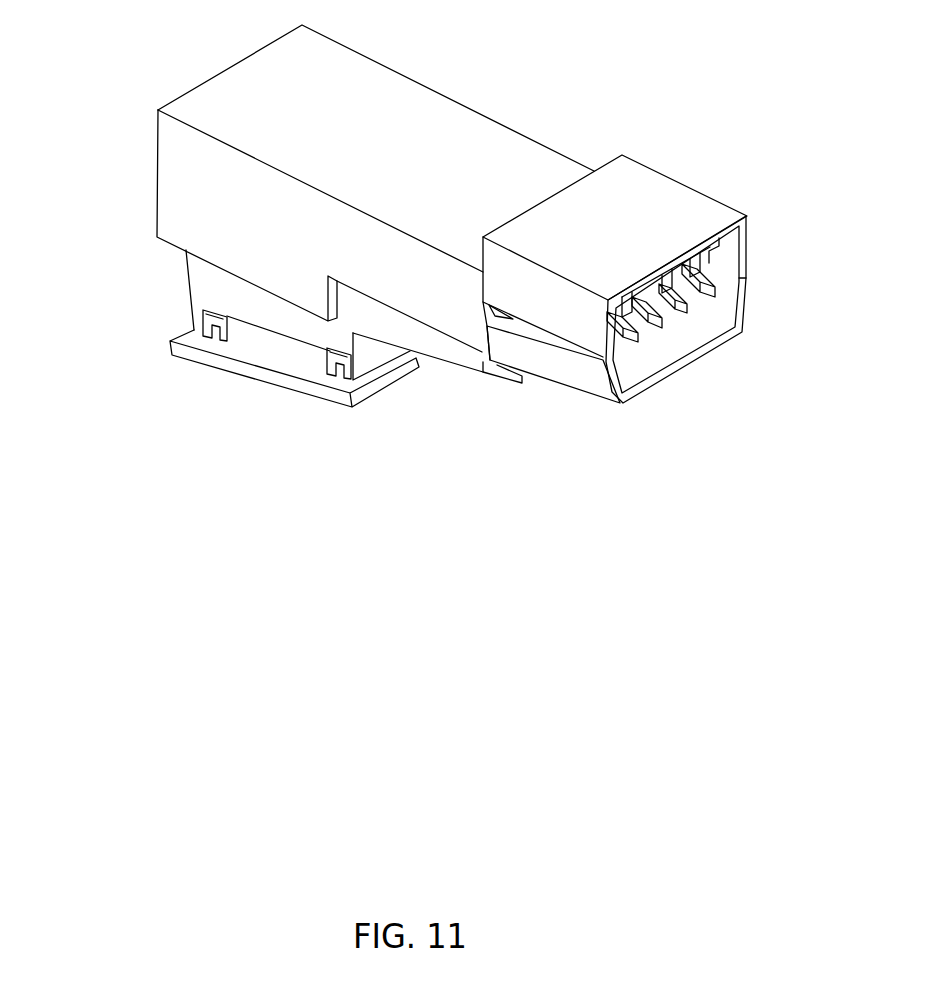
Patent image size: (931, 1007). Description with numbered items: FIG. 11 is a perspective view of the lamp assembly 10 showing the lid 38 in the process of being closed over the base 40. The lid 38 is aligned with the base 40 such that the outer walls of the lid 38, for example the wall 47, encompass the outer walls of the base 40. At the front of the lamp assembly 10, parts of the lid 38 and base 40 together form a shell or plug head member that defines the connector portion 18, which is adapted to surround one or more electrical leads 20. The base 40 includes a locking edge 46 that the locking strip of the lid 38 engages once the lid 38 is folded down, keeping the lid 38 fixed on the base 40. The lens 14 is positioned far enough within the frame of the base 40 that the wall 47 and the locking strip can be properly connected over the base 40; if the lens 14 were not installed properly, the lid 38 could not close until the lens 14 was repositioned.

The lamp assembly 10 is at (571, 81).
The lens 14 is at (286, 381).
The connector portion 18 is at (695, 163).
The electrical leads 20 is at (715, 295).
The lid 38 is at (157, 157).
The base 40 is at (188, 286).
The locking edge 46 is at (272, 320).
The wall 47 is at (183, 205).